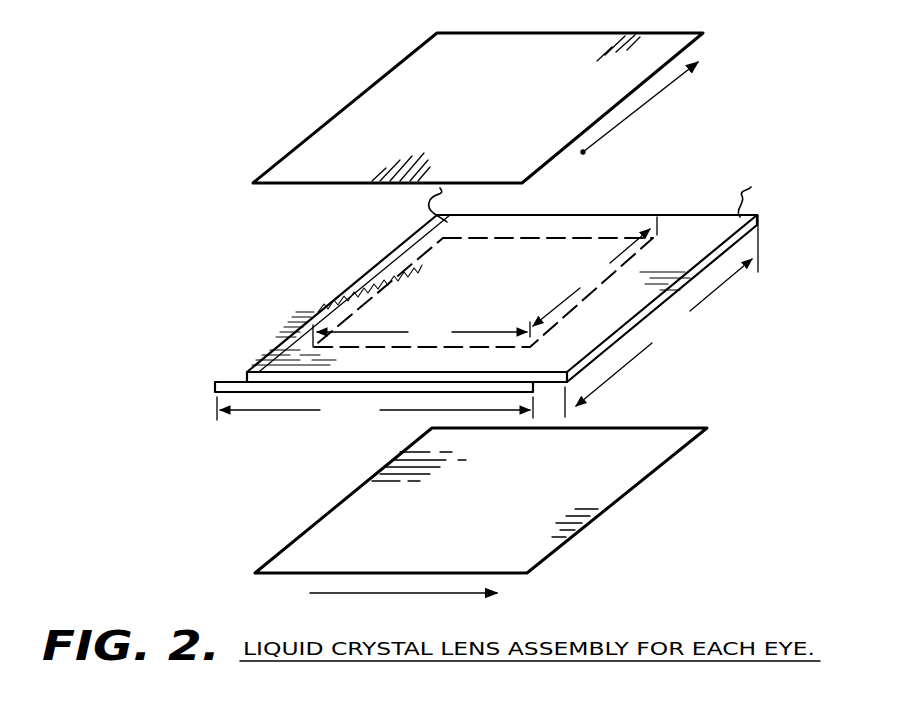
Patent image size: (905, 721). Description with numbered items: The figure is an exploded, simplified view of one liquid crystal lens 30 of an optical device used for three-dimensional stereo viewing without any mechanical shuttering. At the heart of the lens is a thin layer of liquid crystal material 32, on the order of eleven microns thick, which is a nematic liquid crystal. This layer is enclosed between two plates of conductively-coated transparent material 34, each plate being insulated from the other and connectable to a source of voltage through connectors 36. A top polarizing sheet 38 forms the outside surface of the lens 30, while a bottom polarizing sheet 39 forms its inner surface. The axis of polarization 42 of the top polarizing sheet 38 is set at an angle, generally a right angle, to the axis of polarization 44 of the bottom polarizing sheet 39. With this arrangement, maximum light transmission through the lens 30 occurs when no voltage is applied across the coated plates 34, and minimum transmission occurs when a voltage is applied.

The liquid crystal lens 30 is at (275, 240).
The liquid crystal material 32 is at (437, 248).
The plates of conductively-coated transparent material 34 is at (157, 357).
The connectors 36 is at (737, 194).
The top polarizing sheet 38 is at (355, 185).
The bottom polarizing sheet 39 is at (340, 503).
The axis of polarization of the top polarizing sheet 42 is at (586, 151).
The axis of polarization of the bottom polarizing sheet 44 is at (322, 597).